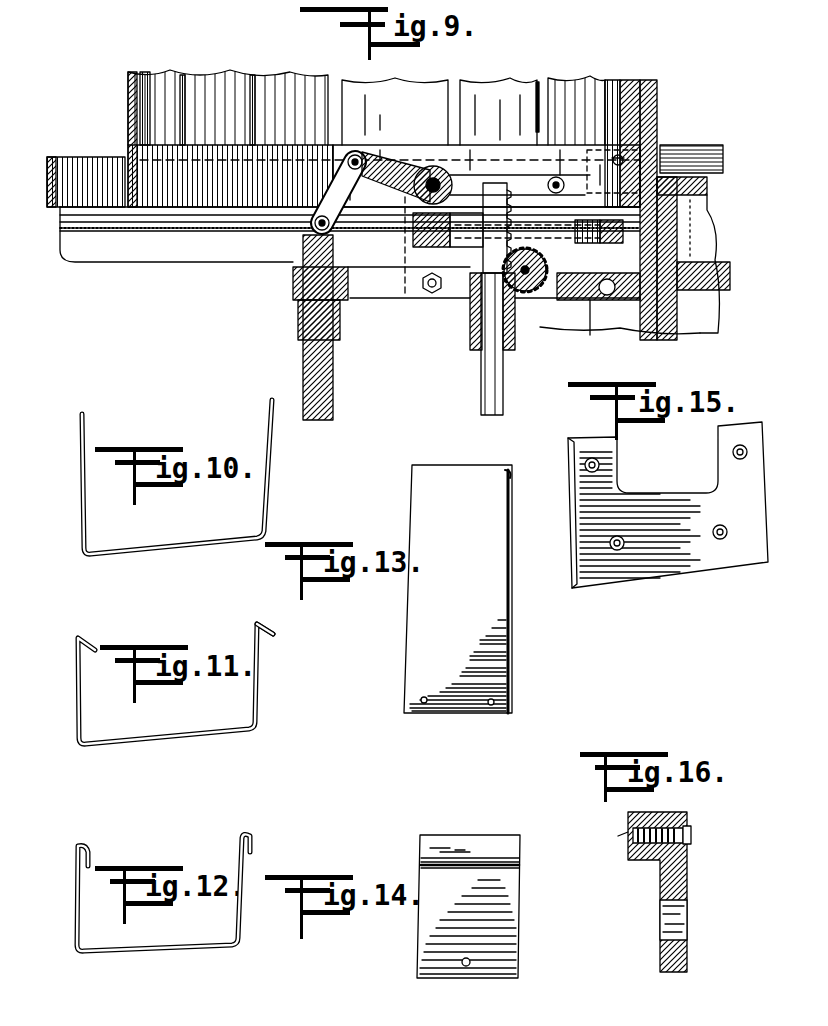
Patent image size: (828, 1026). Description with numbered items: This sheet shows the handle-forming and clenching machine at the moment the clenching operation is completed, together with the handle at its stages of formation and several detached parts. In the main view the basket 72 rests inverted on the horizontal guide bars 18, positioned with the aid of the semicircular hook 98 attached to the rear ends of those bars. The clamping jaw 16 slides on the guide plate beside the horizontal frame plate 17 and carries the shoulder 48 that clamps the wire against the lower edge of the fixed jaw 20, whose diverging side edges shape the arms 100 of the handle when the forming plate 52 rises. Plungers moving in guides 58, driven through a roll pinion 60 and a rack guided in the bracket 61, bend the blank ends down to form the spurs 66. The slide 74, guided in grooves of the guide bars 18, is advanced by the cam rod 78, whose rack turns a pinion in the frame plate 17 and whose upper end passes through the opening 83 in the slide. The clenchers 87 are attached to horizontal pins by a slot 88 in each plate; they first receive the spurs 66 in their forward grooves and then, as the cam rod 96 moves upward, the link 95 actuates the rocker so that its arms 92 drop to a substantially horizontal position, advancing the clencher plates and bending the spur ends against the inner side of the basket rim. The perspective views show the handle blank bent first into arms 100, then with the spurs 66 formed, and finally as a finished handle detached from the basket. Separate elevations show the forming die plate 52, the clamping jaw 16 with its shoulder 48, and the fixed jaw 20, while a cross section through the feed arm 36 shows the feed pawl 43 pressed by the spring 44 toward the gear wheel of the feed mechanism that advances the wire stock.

In FIG. 9, the clamping jaw 16 is at (658, 314).
In FIG. 14, the clamping jaw 16 is at (506, 920).
In FIG. 9, the frame plate 17 is at (598, 314).
In FIG. 9, the guide bars 18 is at (250, 258).
In FIG. 15, the fixed jaw 20 is at (668, 505).
In FIG. 16, the feed arm 36 is at (678, 888).
In FIG. 16, the feed pawl 43 is at (692, 835).
In FIG. 16, the spring 44 is at (628, 838).
In FIG. 14, the shoulder 48 is at (490, 864).
In FIG. 13, the plate 52 is at (488, 631).
In FIG. 9, the guides 58 is at (688, 158).
In FIG. 9, the roll pinion 60 is at (514, 306).
In FIG. 9, the bracket 61 is at (722, 276).
In FIG. 11, the spurs 66 is at (276, 634).
In FIG. 9, the basket 72 is at (652, 110).
In FIG. 9, the slide 74 is at (426, 235).
In FIG. 9, the cam rod 78 is at (503, 412).
In FIG. 9, the opening 83 is at (548, 250).
In FIG. 9, the clenchers 87 is at (613, 171).
In FIG. 9, the slot 88 is at (604, 160).
In FIG. 9, the arms 92 is at (476, 186).
In FIG. 9, the link 95 is at (333, 200).
In FIG. 9, the cam rod 96 is at (335, 398).
In FIG. 9, the semicircular hook 98 is at (48, 165).
In FIG. 10, the arms 100 is at (274, 480).
In FIG. 11, the arms 100 is at (258, 682).
In FIG. 12, the arms 100 is at (240, 922).